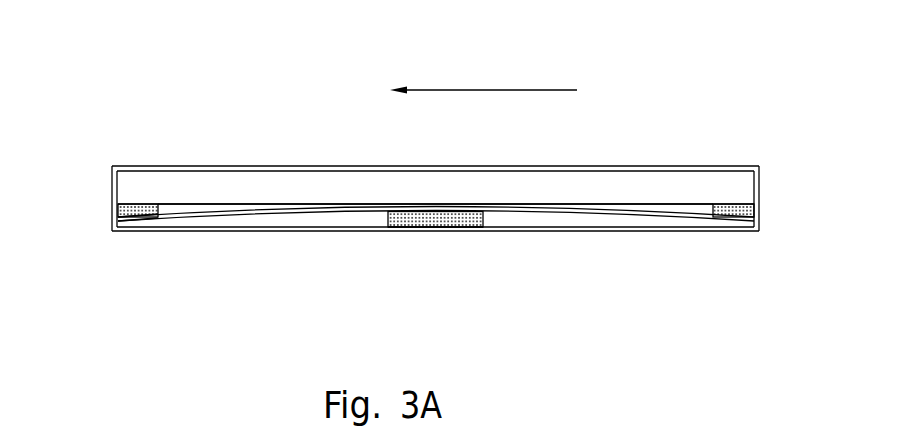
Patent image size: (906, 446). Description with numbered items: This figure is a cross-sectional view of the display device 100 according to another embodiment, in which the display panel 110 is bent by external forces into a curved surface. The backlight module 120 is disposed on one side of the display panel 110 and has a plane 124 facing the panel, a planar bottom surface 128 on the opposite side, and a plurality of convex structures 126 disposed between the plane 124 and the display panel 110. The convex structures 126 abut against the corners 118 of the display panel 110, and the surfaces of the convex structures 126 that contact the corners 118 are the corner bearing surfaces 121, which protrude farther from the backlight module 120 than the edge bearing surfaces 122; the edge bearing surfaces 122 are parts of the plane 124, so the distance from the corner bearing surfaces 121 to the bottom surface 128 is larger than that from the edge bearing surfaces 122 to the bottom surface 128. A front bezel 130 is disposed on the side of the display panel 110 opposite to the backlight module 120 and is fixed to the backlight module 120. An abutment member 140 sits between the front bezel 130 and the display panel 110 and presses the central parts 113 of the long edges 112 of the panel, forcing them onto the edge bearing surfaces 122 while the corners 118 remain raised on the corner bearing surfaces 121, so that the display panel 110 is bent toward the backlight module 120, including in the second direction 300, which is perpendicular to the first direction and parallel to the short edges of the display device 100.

The display device 100 is at (92, 52).
The display panel 110 is at (304, 226).
The long edges 112 is at (338, 213).
The central parts of the long edges 113 is at (400, 228).
The corner 118 is at (144, 223).
The backlight module 120 is at (151, 184).
The corner bearing surfaces 121 is at (131, 221).
The edge bearing surfaces 122 is at (275, 203).
The plane 124 is at (205, 192).
The convex structures 126 is at (118, 214).
The bottom surface 128 is at (533, 166).
The front bezel 130 is at (633, 232).
The abutment member 140 is at (449, 228).
The second direction 300 is at (488, 89).